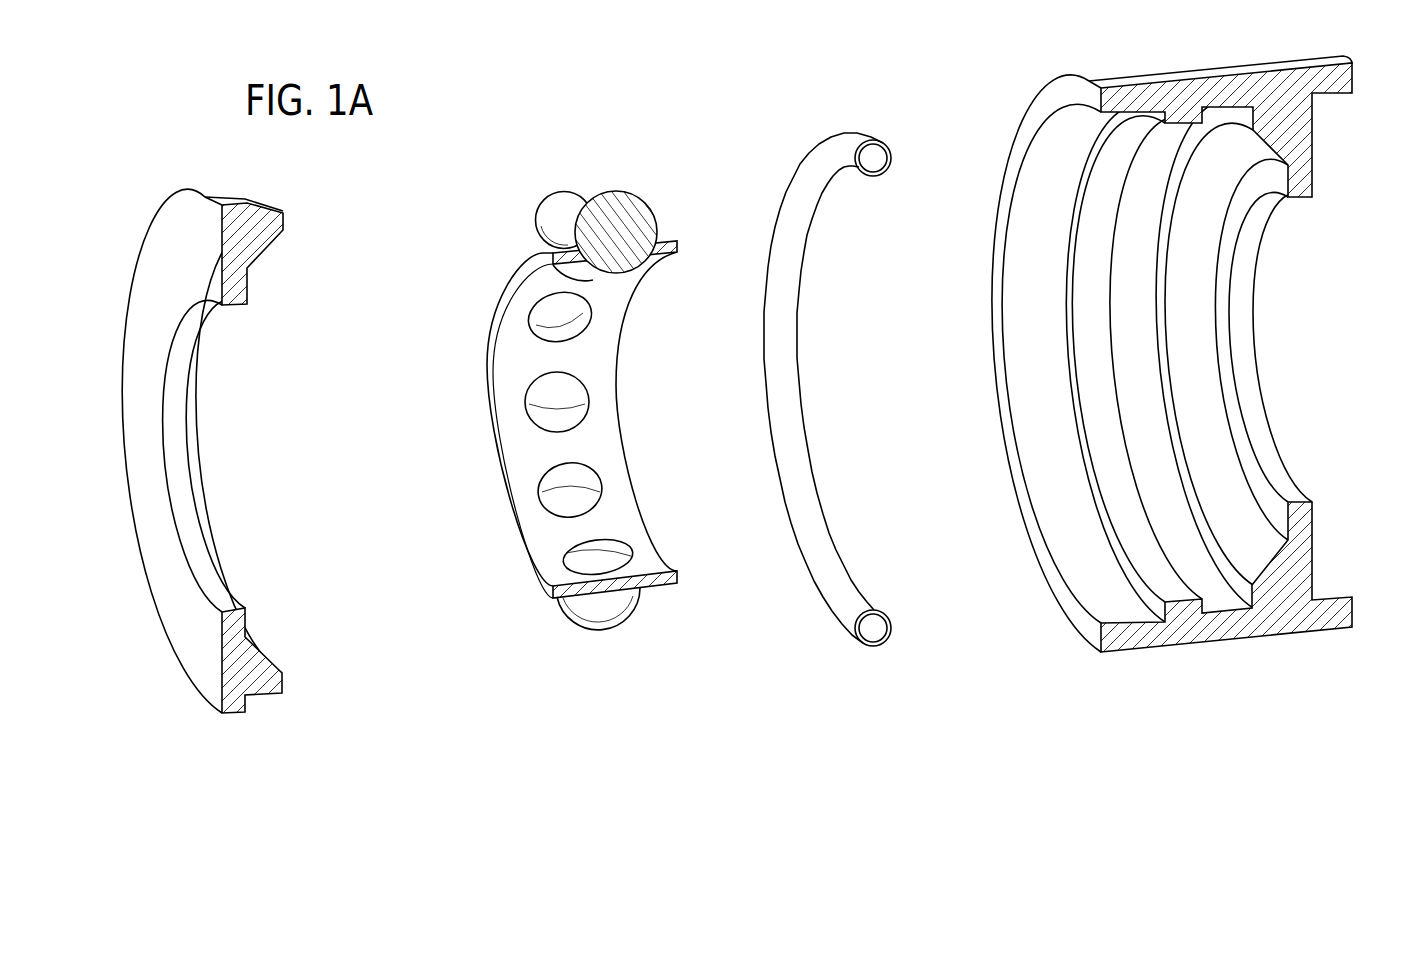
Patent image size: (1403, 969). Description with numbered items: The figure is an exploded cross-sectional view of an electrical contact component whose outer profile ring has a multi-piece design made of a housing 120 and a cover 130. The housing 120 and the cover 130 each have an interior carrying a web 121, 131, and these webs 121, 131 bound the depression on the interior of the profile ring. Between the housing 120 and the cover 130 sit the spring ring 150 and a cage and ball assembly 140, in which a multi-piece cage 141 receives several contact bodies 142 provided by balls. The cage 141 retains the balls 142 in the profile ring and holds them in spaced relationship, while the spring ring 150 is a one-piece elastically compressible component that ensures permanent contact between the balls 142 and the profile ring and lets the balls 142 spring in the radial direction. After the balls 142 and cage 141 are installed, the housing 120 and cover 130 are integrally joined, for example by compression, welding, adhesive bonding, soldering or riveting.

The housing 120 is at (1190, 340).
The web 121 is at (1300, 165).
The cover 130 is at (222, 431).
The web 131 is at (235, 288).
The roller assembly 140 is at (568, 369).
The cage 141 is at (605, 438).
The contact bodies 142 is at (632, 208).
The spring ring 150 is at (830, 158).